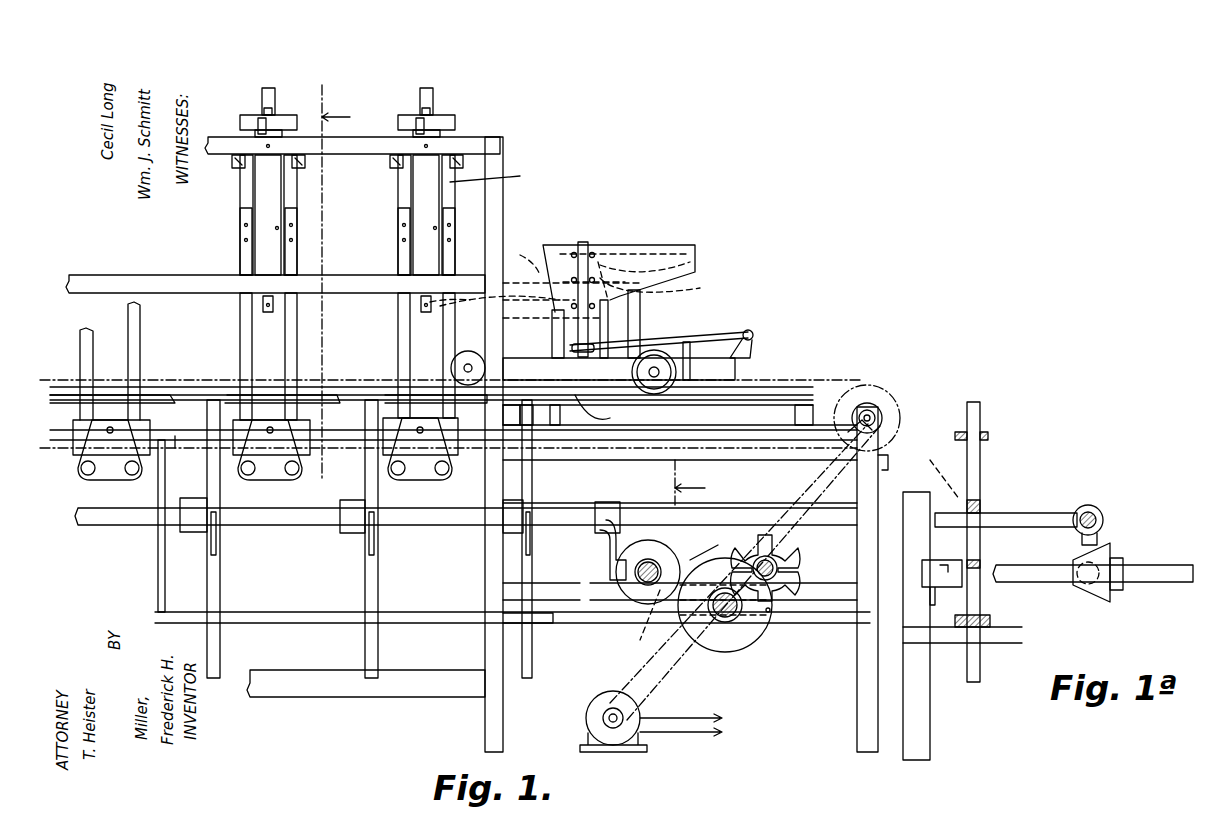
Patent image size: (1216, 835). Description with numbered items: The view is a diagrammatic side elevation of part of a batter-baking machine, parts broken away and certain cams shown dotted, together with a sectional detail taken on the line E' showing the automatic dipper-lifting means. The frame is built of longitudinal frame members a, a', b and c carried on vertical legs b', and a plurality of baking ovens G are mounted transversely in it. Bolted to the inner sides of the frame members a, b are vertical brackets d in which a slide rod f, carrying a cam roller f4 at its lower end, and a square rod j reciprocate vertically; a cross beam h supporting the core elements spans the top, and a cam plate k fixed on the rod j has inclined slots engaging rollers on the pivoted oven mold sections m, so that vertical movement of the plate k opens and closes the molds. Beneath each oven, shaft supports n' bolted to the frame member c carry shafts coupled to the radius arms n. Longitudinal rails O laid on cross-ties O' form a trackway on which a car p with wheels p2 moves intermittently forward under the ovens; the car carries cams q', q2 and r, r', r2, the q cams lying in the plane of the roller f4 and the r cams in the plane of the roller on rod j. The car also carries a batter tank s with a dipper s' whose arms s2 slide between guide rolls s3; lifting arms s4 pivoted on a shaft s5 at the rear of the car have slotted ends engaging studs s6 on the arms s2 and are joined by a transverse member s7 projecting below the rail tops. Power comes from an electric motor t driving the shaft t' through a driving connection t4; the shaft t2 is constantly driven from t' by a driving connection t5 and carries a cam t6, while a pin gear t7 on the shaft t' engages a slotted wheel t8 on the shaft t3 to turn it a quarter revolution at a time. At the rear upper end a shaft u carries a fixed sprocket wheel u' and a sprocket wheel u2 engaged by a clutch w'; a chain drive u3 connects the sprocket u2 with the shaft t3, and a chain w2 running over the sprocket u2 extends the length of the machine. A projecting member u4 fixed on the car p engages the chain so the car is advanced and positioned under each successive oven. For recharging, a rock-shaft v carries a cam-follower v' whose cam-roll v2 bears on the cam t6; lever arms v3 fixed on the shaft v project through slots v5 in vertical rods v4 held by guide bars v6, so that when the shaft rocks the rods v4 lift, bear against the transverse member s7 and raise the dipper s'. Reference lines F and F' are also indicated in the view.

In FIG. 1, the longitudinal frame member a is at (352, 159).
In FIG. 1, the longitudinal frame member a' is at (366, 705).
In FIG. 1, the longitudinal frame member b is at (275, 292).
In FIG. 1, the vertical legs b' is at (670, 579).
In FIG. 1A, the vertical legs b' is at (933, 626).
In FIG. 1, the longitudinal frame member c is at (72, 441).
In FIG. 1, the vertical bracket d is at (347, 215).
In FIG. 1, the vertical slide rod f is at (260, 121).
In FIG. 1, the cam roller f4 is at (273, 304).
In FIG. 1, the cross beam h is at (281, 127).
In FIG. 1, the third rod j is at (268, 88).
In FIG. 1, the cam plate k is at (236, 168).
In FIG. 1, the pivoted oven mold sections m is at (240, 208).
In FIG. 1, the radius arms n is at (267, 356).
In FIG. 1, the shaft supports n' is at (265, 449).
In FIG. 1, the longitudinal rails O is at (431, 378).
In FIG. 1, the cross-ties O' is at (668, 405).
In FIG. 1, the car p is at (619, 335).
In FIG. 1, the wheels p2 is at (478, 360).
In FIG. 1, the cam q' is at (540, 288).
In FIG. 1, the cam q2 is at (700, 288).
In FIG. 1, the guide rod r is at (450, 300).
In FIG. 1, the cam r' is at (529, 253).
In FIG. 1, the cam r2 is at (695, 268).
In FIG. 1, the batter tank s is at (619, 264).
In FIG. 1, the dipper s' is at (617, 259).
In FIG. 1, the arms s2 is at (585, 242).
In FIG. 1, the guide rolls s3 is at (575, 252).
In FIG. 1, the lifting arms s4 is at (735, 333).
In FIG. 1, the shaft s5 is at (753, 333).
In FIG. 1, the studs s6 is at (578, 352).
In FIG. 1, the transverse member s7 is at (684, 345).
In FIG. 1, the electric motor t is at (641, 721).
In FIG. 1, the shaft t' is at (725, 605).
In FIG. 1, the shaft t2 is at (640, 583).
In FIG. 1A, the shaft t2 is at (1152, 582).
In FIG. 1, the shaft t3 is at (780, 560).
In FIG. 1, the driving connection t4 is at (655, 705).
In FIG. 1, the driving connection t5 is at (690, 562).
In FIG. 1, the cam t6 is at (645, 585).
In FIG. 1A, the cam t6 is at (1098, 568).
In FIG. 1, the pin gear t7 is at (762, 640).
In FIG. 1, the slotted wheel t8 is at (776, 598).
In FIG. 1, the shaft u is at (867, 408).
In FIG. 1, the sprocket wheel u' is at (912, 400).
In FIG. 1, the sprocket wheel u2 is at (868, 385).
In FIG. 1, the chain drive u3 is at (826, 472).
In FIG. 1, the projecting member u4 is at (601, 411).
In FIG. 1A, the rock-shaft v is at (1099, 509).
In FIG. 1, the cam-follower v' is at (466, 529).
In FIG. 1A, the cam-follower v' is at (1073, 542).
In FIG. 1, the cam-roll v2 is at (612, 582).
In FIG. 1, the lever arms v3 is at (200, 532).
In FIG. 1, the vertical rods v4 is at (220, 580).
In FIG. 1A, the vertical rods v4 is at (980, 478).
In FIG. 1, the slots v5 is at (217, 547).
In FIG. 1A, the slots v5 is at (1032, 513).
In FIG. 1, the guide bars v6 is at (350, 435).
In FIG. 1A, the guide bars v6 is at (990, 434).
In FIG. 1, the clutch w' is at (888, 430).
In FIG. 1A, the clutch w' is at (933, 463).
In FIG. 1, the chain w2 is at (176, 436).
In FIG. 1, the direction line F is at (686, 481).
In FIG. 1, the center line F' is at (331, 273).
In FIG. 1, the line E' is at (663, 630).
In FIG. 1, the baking ovens G is at (492, 172).